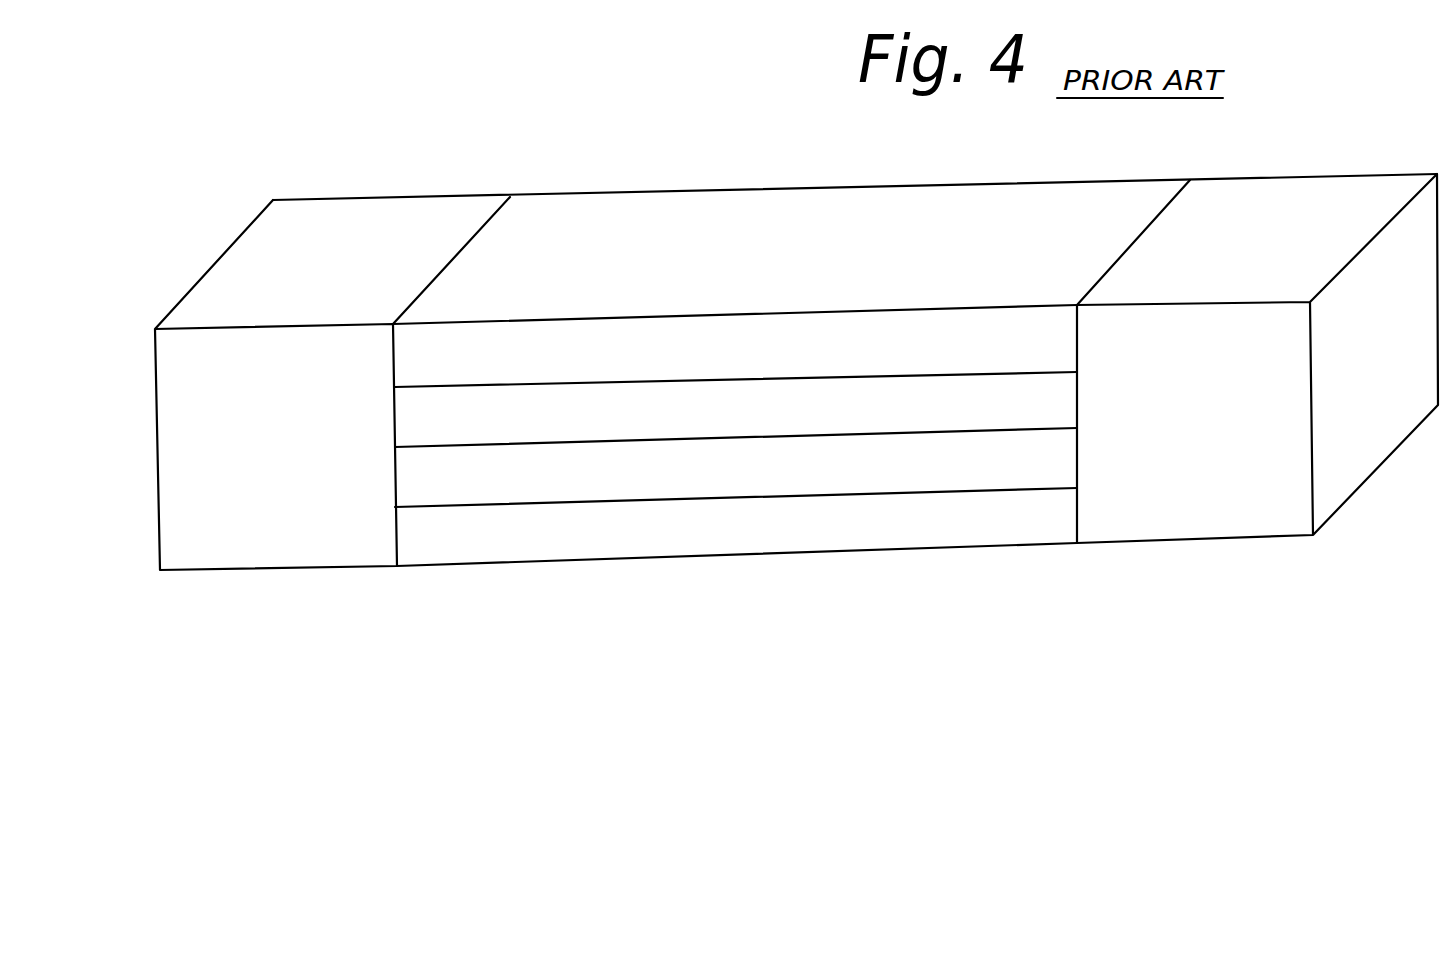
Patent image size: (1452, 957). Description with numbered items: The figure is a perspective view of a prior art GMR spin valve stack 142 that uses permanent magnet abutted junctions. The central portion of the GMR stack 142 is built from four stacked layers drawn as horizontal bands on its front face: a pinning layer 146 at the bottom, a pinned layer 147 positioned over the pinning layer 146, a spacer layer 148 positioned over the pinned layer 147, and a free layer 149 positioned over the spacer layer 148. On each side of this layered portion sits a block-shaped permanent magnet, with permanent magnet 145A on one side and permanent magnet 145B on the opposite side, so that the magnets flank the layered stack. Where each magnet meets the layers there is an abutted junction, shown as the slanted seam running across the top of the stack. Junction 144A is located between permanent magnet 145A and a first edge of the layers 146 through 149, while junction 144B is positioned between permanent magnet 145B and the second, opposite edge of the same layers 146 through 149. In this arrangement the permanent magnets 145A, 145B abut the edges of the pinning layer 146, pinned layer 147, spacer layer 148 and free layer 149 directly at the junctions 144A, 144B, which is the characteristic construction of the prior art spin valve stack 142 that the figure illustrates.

The GMR spin valve stack 142 is at (800, 170).
The junction 144A is at (460, 253).
The junction 144B is at (1163, 218).
The permanent magnet 145A is at (303, 543).
The permanent magnet 145B is at (1253, 523).
The pinning layer 146 is at (888, 538).
The pinned layer 147 is at (882, 483).
The spacer layer 148 is at (888, 427).
The free layer 149 is at (876, 365).